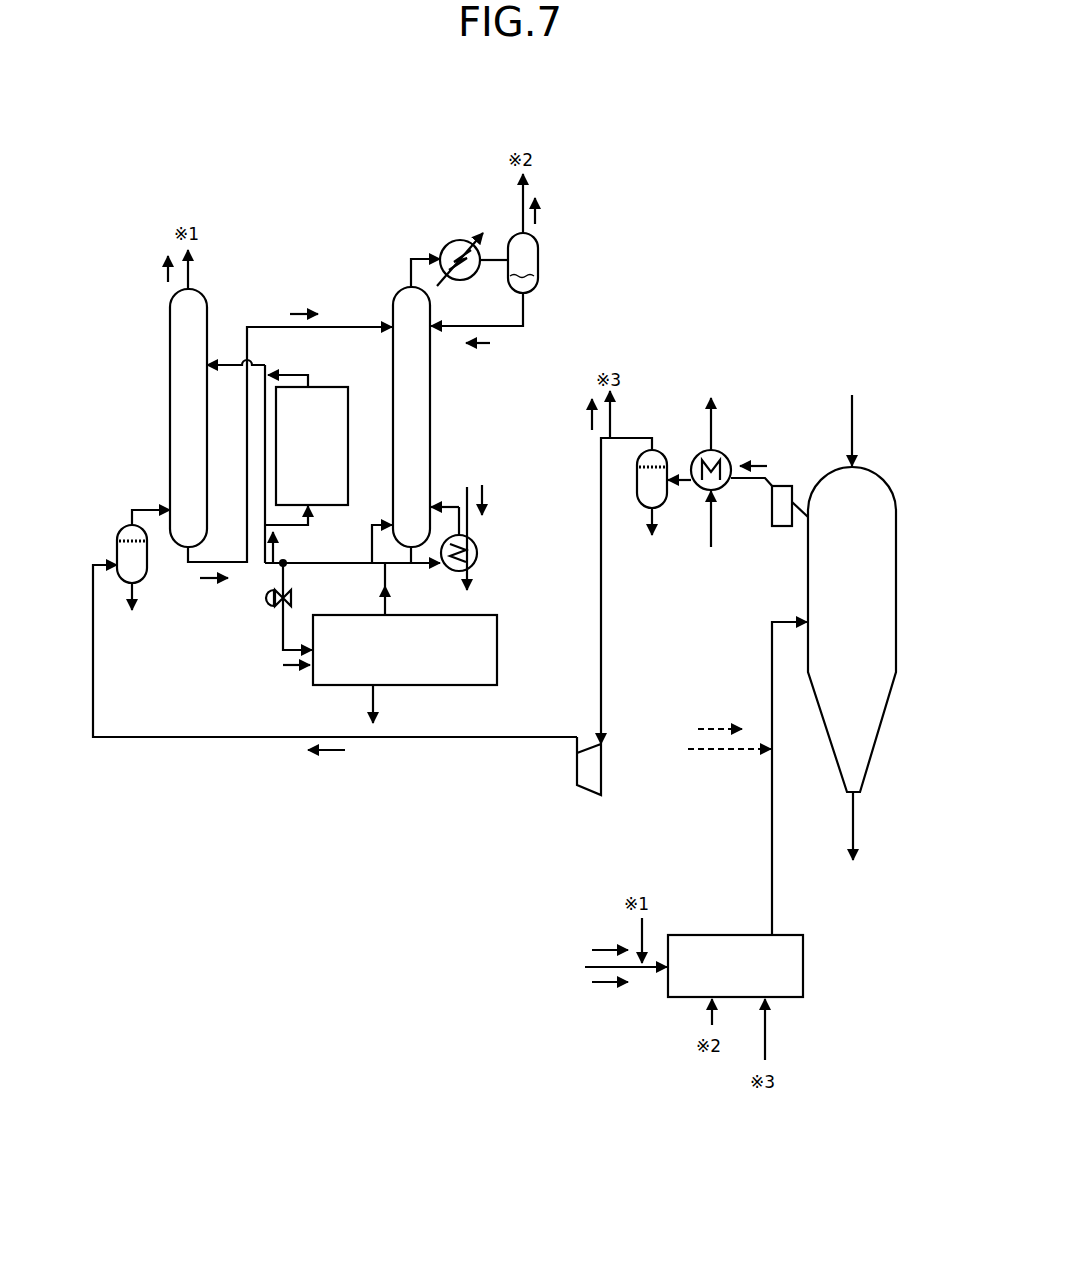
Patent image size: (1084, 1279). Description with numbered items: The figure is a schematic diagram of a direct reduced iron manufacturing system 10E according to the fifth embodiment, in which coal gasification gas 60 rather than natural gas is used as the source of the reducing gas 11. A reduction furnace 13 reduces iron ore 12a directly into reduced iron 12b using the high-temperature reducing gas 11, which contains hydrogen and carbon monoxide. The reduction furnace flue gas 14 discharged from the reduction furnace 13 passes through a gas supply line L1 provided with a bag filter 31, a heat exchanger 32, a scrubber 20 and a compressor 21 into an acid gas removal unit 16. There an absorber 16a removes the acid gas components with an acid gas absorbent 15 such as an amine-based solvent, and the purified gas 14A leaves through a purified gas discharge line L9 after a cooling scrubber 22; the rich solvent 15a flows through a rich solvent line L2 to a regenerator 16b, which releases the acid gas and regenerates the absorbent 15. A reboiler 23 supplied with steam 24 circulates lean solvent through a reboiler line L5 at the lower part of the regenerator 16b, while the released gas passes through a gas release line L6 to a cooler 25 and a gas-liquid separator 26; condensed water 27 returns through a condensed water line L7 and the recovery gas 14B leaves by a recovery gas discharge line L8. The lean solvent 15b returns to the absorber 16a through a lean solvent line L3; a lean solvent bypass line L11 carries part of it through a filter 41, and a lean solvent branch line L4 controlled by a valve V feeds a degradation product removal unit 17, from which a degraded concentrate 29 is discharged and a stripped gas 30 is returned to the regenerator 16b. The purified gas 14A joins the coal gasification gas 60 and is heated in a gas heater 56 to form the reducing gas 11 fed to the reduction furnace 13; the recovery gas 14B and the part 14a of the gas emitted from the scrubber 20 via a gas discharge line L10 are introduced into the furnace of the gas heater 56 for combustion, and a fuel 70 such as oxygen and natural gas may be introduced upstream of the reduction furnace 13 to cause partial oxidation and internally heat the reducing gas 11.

The direct reduced iron manufacturing system 10E is at (551, 150).
The reducing gas 11 is at (784, 620).
The iron ore 12a is at (849, 419).
The reduced iron 12b is at (852, 842).
The reduction furnace 13 is at (898, 541).
The reduction furnace flue gas 14 is at (327, 757).
The purified gas 14A is at (168, 282).
The recovery gas 14B is at (540, 212).
The part of the gas emitted from the scrubber 14a is at (589, 420).
The acid gas absorbent 15 is at (383, 260).
The rich solvent 15a is at (297, 312).
The lean solvent 15b is at (280, 541).
The acid gas removal unit 16 is at (407, 133).
The absorber 16a is at (206, 289).
The regenerator 16b is at (400, 287).
The degradation product removal unit 17 is at (497, 645).
The scrubber 20 is at (640, 468).
The compressor 21 is at (590, 792).
The cooling scrubber 22 is at (118, 550).
The reboiler 23 is at (478, 553).
The steam 24 is at (488, 503).
The cooler 25 is at (453, 241).
The gas-liquid separator 26 is at (538, 265).
The condensed water 27 is at (483, 348).
The degraded concentrate 29 is at (388, 714).
The stripped gas 30 is at (390, 600).
The bag filter 31 is at (782, 486).
The heat exchanger 32 is at (700, 457).
The filter 41 is at (322, 387).
The gas heater 56 is at (698, 935).
The coal gasification gas 60 is at (605, 950).
The fuel 70 is at (715, 728).
The valve V is at (263, 598).
The gas supply line L1 is at (603, 648).
The rich solvent line L2 is at (188, 565).
The lean solvent line L3 is at (225, 360).
The lean solvent branch line L4 is at (278, 650).
The reboiler line L5 is at (446, 506).
The gas release line L6 is at (411, 258).
The condensed water line L7 is at (525, 312).
The recovery gas discharge line L8 is at (518, 196).
The purified gas discharge line L9 is at (197, 289).
The gas discharge line L10 is at (602, 398).
The lean solvent bypass line L11 is at (296, 375).